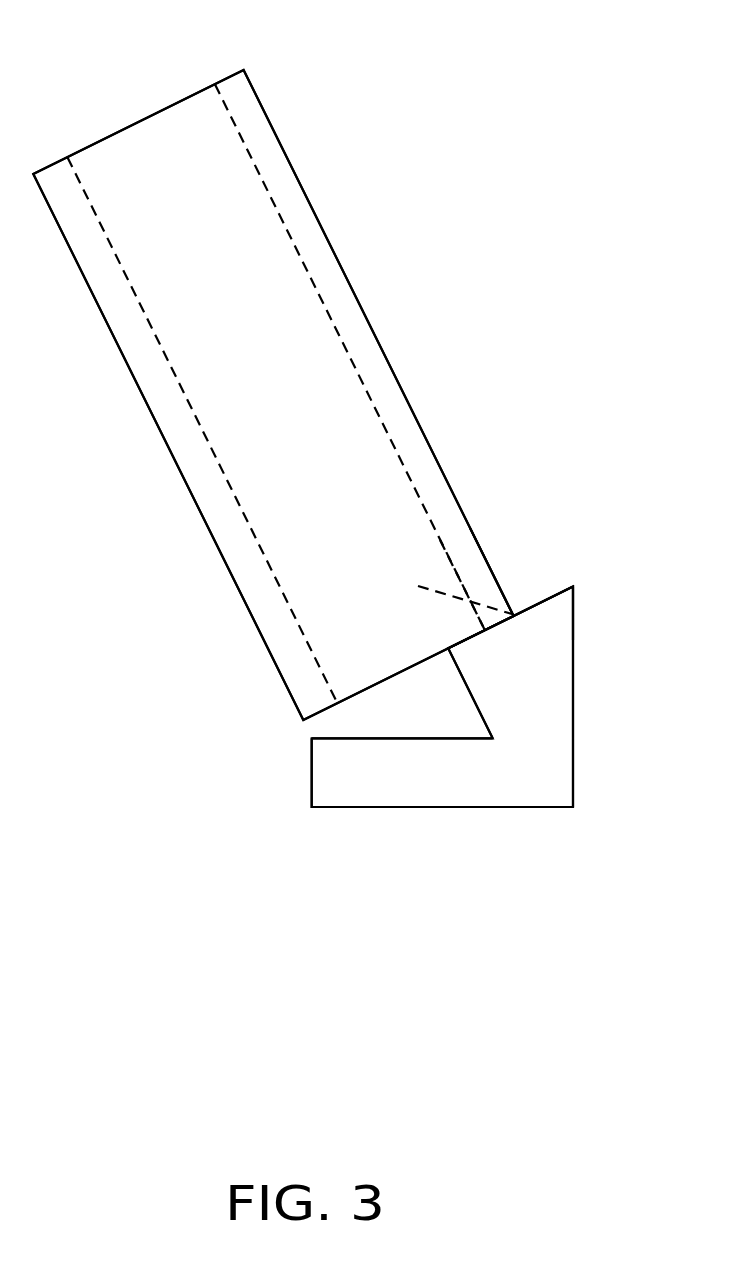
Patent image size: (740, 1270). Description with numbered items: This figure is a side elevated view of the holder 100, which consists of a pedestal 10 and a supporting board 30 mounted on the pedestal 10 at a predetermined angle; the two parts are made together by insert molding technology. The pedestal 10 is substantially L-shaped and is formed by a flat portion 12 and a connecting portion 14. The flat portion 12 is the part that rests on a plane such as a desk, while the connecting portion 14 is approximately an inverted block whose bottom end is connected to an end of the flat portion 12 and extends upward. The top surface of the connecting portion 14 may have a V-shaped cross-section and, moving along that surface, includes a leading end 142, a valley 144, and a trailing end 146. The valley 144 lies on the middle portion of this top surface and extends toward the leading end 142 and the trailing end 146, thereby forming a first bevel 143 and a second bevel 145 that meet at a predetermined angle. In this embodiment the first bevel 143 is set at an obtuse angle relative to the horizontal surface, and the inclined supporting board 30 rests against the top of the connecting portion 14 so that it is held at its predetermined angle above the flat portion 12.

The holder 100 is at (130, 63).
The supporting board 30 is at (230, 195).
The pedestal 10 is at (604, 752).
The flat portion 12 is at (438, 777).
The connecting portion 14 is at (555, 668).
The leading end 142 is at (571, 588).
The first bevel 143 is at (538, 600).
The valley 144 is at (512, 613).
The second bevel 145 is at (450, 592).
The trailing end 146 is at (418, 585).